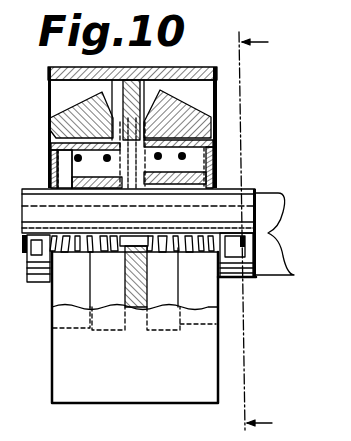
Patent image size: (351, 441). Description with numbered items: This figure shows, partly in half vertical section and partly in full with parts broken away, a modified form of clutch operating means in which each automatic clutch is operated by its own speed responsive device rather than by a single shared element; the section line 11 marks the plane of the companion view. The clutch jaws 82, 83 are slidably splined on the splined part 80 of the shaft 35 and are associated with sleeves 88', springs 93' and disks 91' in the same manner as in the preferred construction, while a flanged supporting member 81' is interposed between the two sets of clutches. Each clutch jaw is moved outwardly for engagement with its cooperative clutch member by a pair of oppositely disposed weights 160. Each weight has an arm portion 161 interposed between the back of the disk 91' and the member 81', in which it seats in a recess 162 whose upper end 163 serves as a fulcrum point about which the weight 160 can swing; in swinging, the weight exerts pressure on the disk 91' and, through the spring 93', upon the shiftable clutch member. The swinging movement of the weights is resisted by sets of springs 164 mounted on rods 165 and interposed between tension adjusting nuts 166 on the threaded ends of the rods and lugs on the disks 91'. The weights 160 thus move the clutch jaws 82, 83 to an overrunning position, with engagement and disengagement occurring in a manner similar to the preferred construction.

The section line 11- 11 is at (268, 235).
The weights 160 is at (72, 105).
The upper end of recess 163 is at (136, 82).
The flanged supporting member 81' is at (86, 111).
The springs 93' is at (208, 111).
The arm portion 161 is at (172, 168).
The sleeves 88' is at (115, 164).
The clutch jaw 83 is at (63, 162).
The recess 162 is at (128, 176).
The disks 91' is at (156, 243).
The clutch jaw 82 is at (200, 176).
The splined part 80 is at (238, 203).
The shaft 35 is at (268, 256).
The springs 164 is at (79, 254).
The rods 165 is at (100, 257).
The tension adjusting nuts 166 is at (34, 272).